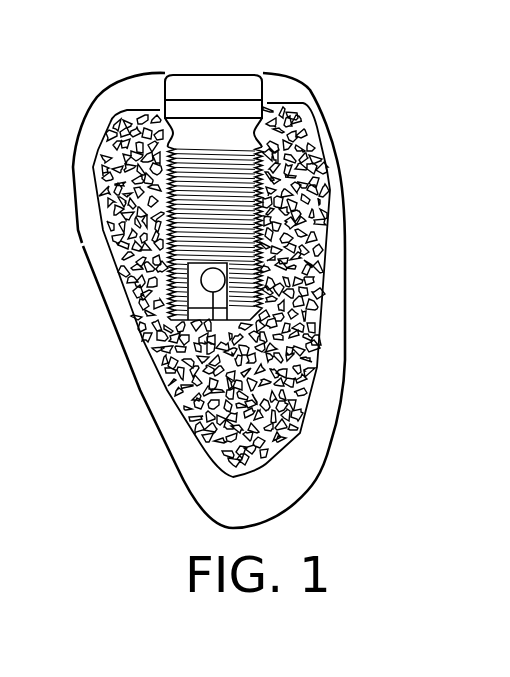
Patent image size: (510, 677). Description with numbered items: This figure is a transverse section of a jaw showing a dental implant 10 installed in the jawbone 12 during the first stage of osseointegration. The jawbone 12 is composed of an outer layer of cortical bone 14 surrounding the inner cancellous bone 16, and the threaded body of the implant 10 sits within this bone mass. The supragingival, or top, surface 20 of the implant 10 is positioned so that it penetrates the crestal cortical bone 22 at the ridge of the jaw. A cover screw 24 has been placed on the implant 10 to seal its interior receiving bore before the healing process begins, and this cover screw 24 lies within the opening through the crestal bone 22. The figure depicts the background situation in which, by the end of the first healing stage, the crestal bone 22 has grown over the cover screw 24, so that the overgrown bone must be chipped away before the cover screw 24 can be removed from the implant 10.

The implant 10 is at (263, 166).
The jawbone 12 is at (264, 270).
The cortical bone 14 is at (337, 228).
The cancellous bone 16 is at (267, 423).
The supragingival surface 20 is at (262, 103).
The crestal cortical bone 22 is at (167, 70).
The cover screw 24 is at (208, 75).